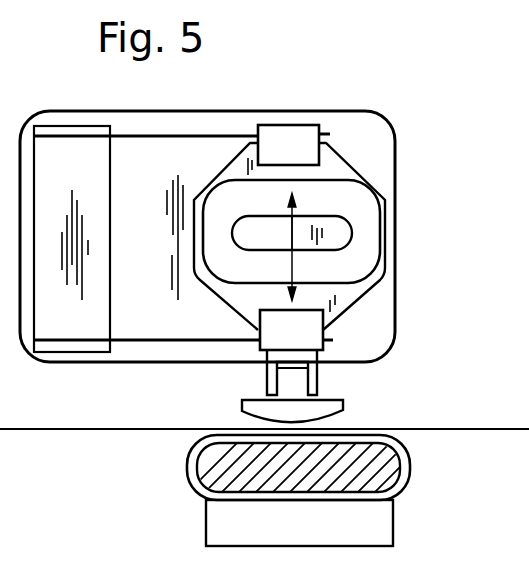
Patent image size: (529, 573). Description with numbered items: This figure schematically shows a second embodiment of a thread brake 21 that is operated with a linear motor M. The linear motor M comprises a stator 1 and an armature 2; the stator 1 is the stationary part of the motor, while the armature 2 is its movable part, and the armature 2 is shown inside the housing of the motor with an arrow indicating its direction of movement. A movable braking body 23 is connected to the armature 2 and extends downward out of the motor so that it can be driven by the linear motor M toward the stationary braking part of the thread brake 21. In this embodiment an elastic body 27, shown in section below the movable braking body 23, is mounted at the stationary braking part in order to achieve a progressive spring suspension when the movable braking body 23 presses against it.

The stator 1 is at (355, 105).
The armature 2 is at (338, 175).
The linear motor M is at (406, 191).
The movable braking body 23 is at (330, 410).
The elastic body 27 is at (378, 467).
The thread brake 21 is at (284, 490).